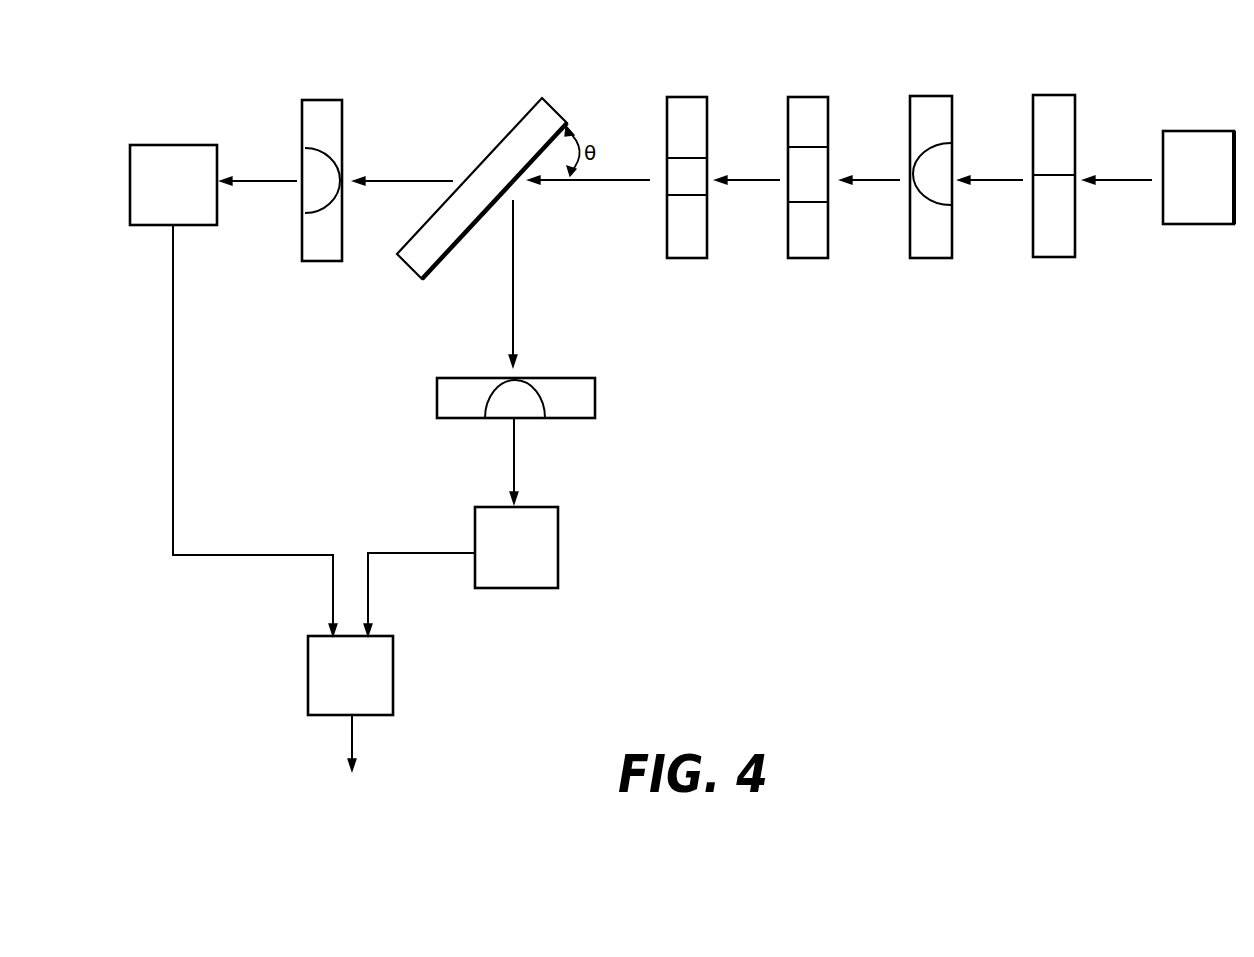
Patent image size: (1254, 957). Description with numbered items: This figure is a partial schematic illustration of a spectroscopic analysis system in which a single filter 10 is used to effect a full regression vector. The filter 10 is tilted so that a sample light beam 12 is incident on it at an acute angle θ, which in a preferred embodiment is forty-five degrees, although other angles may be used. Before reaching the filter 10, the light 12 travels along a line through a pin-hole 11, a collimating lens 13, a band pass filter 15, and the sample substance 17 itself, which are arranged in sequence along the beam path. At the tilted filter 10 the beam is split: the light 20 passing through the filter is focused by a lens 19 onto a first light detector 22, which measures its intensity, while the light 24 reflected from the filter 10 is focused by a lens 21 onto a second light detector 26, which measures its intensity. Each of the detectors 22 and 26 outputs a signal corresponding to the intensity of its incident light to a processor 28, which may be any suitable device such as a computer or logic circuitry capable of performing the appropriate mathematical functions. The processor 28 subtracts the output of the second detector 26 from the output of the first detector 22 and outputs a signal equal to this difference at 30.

The filter 10 is at (522, 114).
The pin-hole 11 is at (1050, 94).
The sample light beam 12 is at (1120, 178).
The collimating lens 13 is at (926, 95).
The band pass filter 15 is at (805, 96).
The sample substance 17 is at (683, 96).
The lens 19 is at (318, 99).
The light passing through the filter 20 is at (402, 180).
The lens 21 is at (596, 393).
The first light detector 22 is at (170, 144).
The light reflected from filter 24 is at (515, 280).
The second light detector 26 is at (559, 543).
The processor 28 is at (394, 668).
The output signal 30 is at (353, 740).